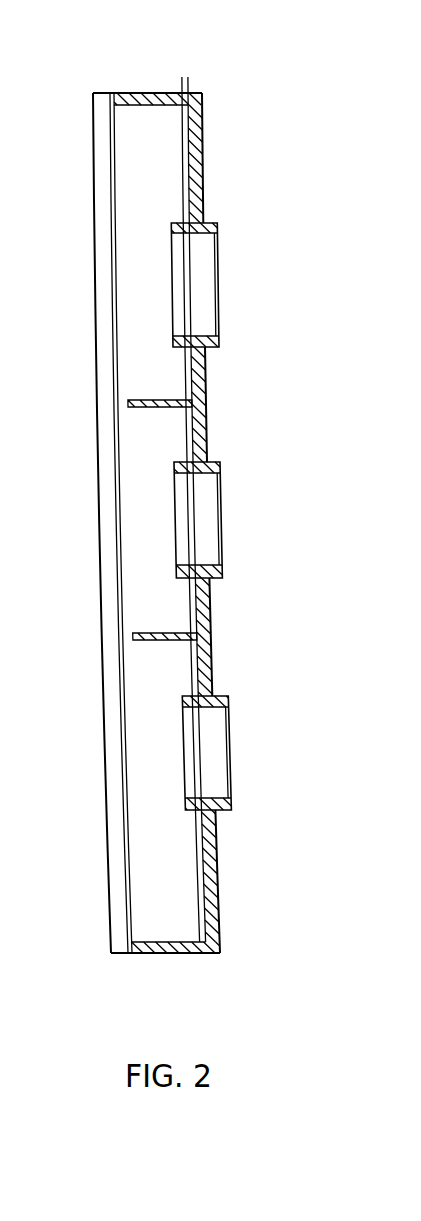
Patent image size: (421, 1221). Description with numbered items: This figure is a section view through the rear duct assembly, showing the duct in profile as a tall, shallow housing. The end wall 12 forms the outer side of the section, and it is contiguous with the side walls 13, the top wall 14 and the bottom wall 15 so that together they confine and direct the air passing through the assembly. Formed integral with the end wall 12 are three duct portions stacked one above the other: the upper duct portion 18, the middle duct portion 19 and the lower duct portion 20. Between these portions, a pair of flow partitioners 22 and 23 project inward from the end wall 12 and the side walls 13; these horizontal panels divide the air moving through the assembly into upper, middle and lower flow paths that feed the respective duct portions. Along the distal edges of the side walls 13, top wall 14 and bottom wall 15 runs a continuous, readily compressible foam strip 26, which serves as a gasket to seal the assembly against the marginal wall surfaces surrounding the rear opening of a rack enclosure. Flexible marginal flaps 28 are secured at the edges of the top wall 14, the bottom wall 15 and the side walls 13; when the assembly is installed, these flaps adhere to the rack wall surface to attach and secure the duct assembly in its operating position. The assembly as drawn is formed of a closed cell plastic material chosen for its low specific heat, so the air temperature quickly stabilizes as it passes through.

The end wall 12 is at (203, 172).
The side walls 13 is at (140, 173).
The top wall 14 is at (134, 91).
The bottom wall 15 is at (177, 957).
The upper duct portion 18 is at (220, 252).
The middle duct portion 19 is at (228, 512).
The lower duct portion 20 is at (232, 753).
The flow partitioner 22 is at (143, 410).
The flow partitioner 23 is at (160, 641).
The foam strip 26 is at (120, 273).
The marginal flaps 28 is at (100, 90).